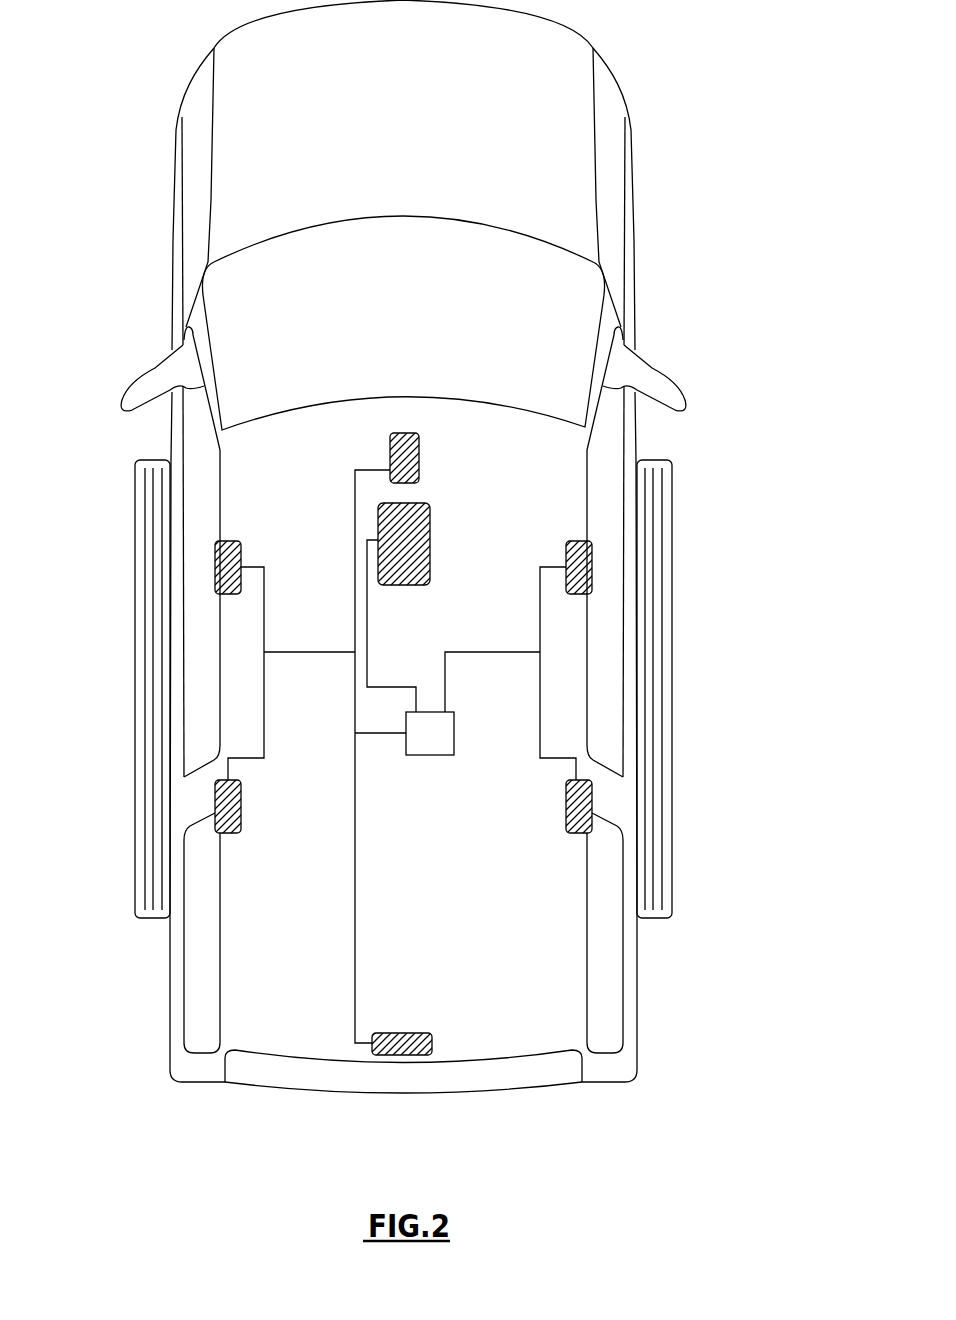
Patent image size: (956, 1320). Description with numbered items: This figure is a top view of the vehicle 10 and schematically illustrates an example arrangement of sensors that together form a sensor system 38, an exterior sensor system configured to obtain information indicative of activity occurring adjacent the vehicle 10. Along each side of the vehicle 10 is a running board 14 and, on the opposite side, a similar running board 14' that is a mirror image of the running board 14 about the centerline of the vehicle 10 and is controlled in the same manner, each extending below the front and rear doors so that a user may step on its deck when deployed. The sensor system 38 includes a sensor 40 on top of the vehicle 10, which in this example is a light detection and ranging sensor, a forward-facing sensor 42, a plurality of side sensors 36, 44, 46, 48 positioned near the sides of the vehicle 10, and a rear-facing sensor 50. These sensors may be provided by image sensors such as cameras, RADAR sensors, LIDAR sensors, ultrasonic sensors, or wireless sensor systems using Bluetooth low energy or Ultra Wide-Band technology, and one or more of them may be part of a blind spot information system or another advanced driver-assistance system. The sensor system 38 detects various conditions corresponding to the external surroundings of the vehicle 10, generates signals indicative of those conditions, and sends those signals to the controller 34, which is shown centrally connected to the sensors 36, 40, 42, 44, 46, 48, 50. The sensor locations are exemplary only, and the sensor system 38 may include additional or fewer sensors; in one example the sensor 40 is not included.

The vehicle 10 is at (702, 58).
The sensor system 38 is at (688, 305).
The running board 14 is at (109, 689).
The running board 14' is at (705, 689).
The controller 34 is at (446, 748).
The side sensor 36 is at (236, 560).
The sensor 40 is at (424, 538).
The forward-facing sensor 42 is at (416, 454).
The side sensor 44 is at (570, 548).
The side sensor 46 is at (236, 810).
The side sensor 48 is at (572, 802).
The rear-facing sensor 50 is at (408, 1036).